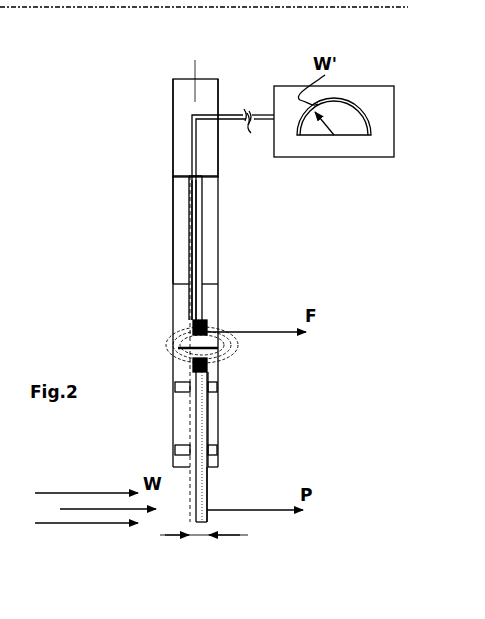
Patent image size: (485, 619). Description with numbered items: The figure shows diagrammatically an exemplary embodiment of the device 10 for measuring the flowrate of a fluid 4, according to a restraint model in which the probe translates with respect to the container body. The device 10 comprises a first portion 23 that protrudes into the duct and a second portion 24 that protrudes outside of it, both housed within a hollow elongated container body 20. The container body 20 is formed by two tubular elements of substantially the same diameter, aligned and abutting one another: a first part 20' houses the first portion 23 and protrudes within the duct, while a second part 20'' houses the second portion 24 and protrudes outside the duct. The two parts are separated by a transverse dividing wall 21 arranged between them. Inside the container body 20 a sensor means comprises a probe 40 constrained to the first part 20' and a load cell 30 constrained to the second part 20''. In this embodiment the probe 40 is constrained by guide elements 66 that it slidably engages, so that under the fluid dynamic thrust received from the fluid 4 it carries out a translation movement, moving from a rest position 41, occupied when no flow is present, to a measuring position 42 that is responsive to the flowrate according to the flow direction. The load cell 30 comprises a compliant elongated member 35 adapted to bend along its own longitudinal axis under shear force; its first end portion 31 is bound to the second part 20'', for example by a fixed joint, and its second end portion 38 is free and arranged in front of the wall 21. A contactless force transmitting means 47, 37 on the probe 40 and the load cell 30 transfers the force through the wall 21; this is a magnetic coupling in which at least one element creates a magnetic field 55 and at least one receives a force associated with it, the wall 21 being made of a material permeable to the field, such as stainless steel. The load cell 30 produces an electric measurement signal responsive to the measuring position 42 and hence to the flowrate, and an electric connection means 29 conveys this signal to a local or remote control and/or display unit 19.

The device 10 is at (130, 114).
The electric connection means 29 is at (223, 114).
The control and/or display unit 19 is at (378, 157).
The first end portion 31 is at (192, 182).
The hollow elongated container body 20 is at (232, 248).
The second part of the hollow container body 20'' is at (142, 230).
The load cell 30 is at (206, 246).
The second portion 24 is at (144, 273).
The second end portion 38 is at (195, 320).
The compliant elongated member 35 is at (206, 284).
The transverse dividing wall 21 is at (179, 343).
The contactless force transmitting means 37 is at (208, 318).
The guide elements 66 is at (208, 384).
The magnetic field 55 is at (237, 350).
The contactless force transmitting means 47 is at (236, 362).
The first part of the hollow container body 20' is at (237, 447).
The first portion 23 is at (155, 447).
The probe 40 is at (212, 472).
The measuring position 42 is at (204, 525).
The rest position 41 is at (200, 525).
The fluid 4 is at (110, 524).